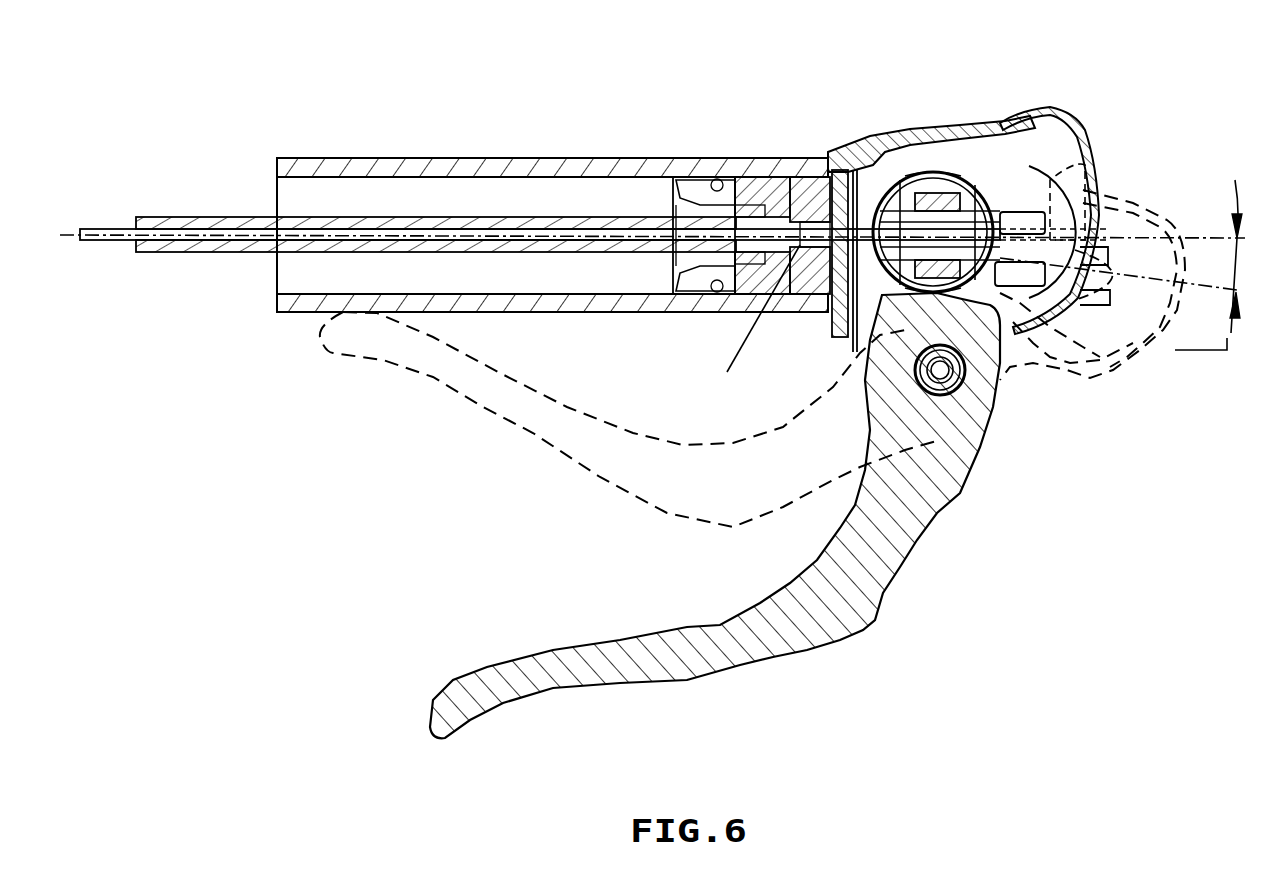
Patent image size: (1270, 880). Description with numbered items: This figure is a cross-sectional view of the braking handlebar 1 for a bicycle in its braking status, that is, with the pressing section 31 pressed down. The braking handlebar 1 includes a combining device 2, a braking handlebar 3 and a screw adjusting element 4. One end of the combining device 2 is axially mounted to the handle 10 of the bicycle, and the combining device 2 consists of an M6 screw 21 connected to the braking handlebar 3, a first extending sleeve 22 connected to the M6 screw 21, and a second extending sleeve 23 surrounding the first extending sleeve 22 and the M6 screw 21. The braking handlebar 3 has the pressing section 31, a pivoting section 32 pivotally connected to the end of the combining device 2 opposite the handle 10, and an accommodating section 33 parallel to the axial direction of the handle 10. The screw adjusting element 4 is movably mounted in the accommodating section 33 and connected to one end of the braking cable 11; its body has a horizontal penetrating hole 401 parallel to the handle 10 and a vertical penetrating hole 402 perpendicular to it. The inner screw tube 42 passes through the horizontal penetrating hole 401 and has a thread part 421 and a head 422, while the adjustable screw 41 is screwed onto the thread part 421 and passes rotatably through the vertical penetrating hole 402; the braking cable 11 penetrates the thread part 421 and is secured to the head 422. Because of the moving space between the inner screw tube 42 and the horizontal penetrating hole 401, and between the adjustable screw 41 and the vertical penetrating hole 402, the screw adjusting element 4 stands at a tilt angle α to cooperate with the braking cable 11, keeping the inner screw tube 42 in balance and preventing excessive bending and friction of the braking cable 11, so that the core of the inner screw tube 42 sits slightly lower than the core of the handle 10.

The braking handlebar 1 is at (488, 524).
The handle 10 is at (435, 163).
The braking cable 11 is at (522, 220).
The combining device 2 is at (790, 72).
The M6 screw 21 is at (777, 175).
The first extending sleeve 22 is at (729, 175).
The second extending sleeve 23 is at (700, 160).
The braking handlebar 3 is at (745, 583).
The pressing section 31 is at (610, 655).
The pivoting section 32 is at (972, 373).
The accommodating section 33 is at (882, 142).
The screw adjusting element 4 is at (990, 150).
The horizontal penetrating hole 401 is at (960, 205).
The vertical penetrating hole 402 is at (928, 185).
The adjustable screw 41 is at (942, 195).
The inner screw tube 42 is at (1140, 118).
The thread part 421 is at (1000, 205).
The head 422 is at (1010, 200).